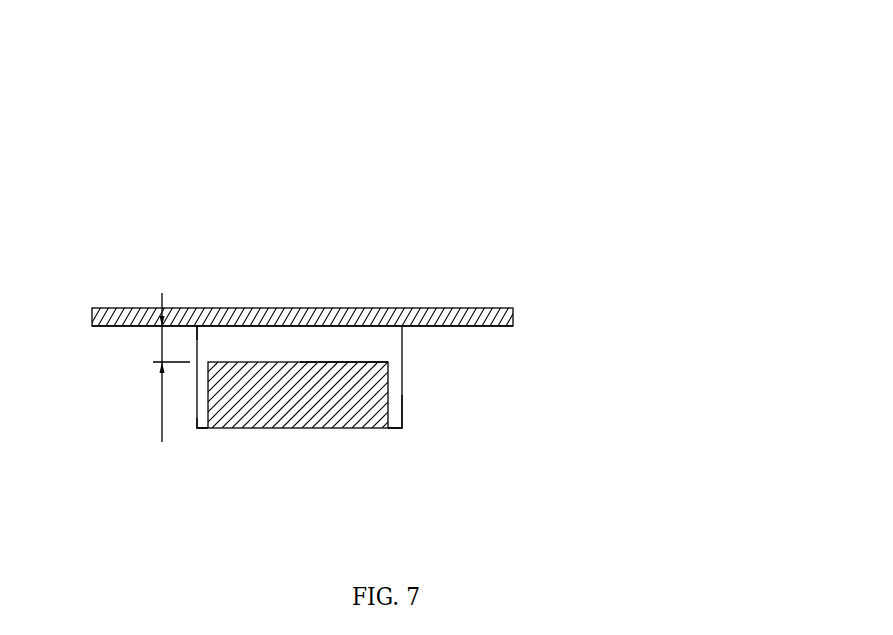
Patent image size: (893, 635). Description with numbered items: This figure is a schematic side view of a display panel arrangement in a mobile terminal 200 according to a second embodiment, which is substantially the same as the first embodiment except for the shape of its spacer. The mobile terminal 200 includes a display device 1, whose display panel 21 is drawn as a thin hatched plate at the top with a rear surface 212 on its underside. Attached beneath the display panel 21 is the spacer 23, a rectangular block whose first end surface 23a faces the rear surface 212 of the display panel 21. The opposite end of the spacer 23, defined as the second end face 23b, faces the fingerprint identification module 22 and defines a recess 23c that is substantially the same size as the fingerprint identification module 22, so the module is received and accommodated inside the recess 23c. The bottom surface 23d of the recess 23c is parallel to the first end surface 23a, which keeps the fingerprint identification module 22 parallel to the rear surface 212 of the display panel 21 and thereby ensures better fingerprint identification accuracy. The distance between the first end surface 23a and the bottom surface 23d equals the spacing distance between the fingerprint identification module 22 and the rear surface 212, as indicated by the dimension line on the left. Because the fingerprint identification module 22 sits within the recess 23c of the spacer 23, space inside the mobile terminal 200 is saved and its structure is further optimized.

The mobile terminal 200 is at (508, 96).
The display device 1 is at (620, 347).
The display panel 21 is at (520, 313).
The rear surface 212 is at (493, 327).
The fingerprint identification module 22 is at (370, 420).
The spacer 23 is at (403, 360).
The first end surface 23a is at (197, 325).
The second end face 23b is at (202, 430).
The recess 23c is at (388, 402).
The bottom surface 23d is at (345, 362).